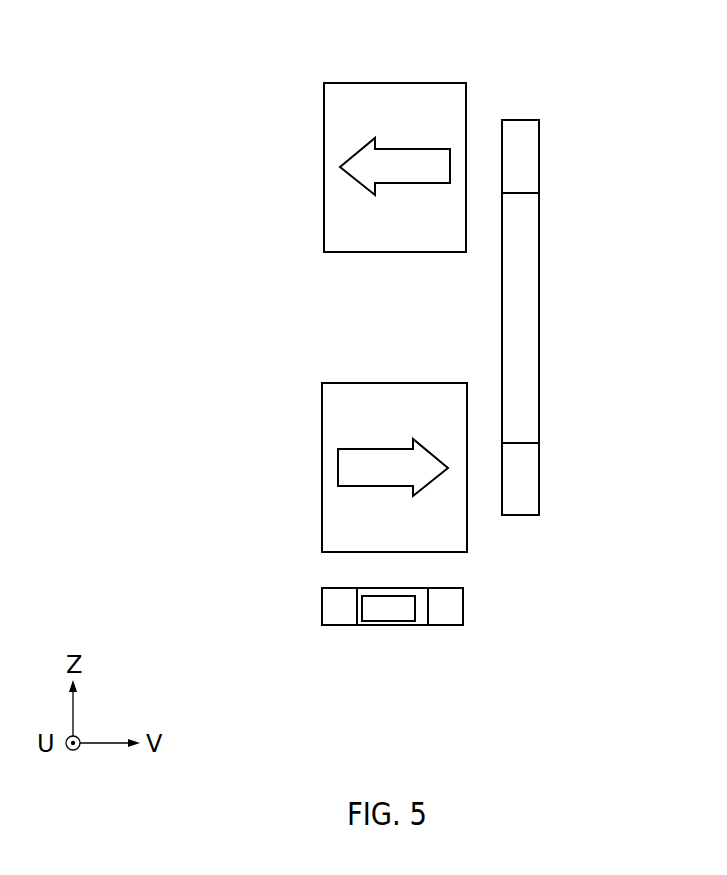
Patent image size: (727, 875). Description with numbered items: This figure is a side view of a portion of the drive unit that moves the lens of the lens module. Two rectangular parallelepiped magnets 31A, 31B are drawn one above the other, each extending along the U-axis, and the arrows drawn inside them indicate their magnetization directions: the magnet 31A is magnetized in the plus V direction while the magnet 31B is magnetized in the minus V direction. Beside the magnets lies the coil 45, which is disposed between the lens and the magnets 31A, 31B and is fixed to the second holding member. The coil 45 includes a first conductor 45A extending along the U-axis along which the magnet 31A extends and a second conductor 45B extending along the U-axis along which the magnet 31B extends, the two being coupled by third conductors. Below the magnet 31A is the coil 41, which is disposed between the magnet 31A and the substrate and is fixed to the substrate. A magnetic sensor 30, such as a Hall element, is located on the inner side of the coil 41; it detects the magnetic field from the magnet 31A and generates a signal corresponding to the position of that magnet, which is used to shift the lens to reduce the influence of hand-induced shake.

The magnetic sensor 30 is at (372, 626).
The magnet 31A is at (322, 465).
The magnet 31B is at (322, 157).
The coil 41 is at (419, 630).
The coil 45 is at (541, 306).
The first conductor 45A is at (540, 478).
The second conductor 45B is at (540, 147).